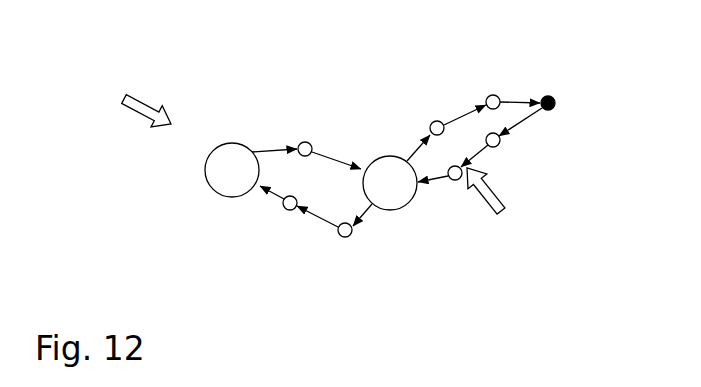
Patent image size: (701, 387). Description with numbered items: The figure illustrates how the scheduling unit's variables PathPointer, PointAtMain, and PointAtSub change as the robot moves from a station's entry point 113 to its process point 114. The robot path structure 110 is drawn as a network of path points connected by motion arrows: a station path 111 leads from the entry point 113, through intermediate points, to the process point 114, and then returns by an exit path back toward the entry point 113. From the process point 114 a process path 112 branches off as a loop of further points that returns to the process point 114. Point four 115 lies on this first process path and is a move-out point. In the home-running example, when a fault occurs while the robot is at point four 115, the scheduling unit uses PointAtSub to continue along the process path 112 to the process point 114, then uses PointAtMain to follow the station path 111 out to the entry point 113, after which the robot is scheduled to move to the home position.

The process flow / application trajectory 110 is at (495, 204).
The first cluster of nodes 111 is at (255, 146).
The second cluster of nodes 112 is at (481, 188).
The entry point 113 is at (223, 162).
The process point 114 is at (387, 197).
The point four 115 is at (456, 180).